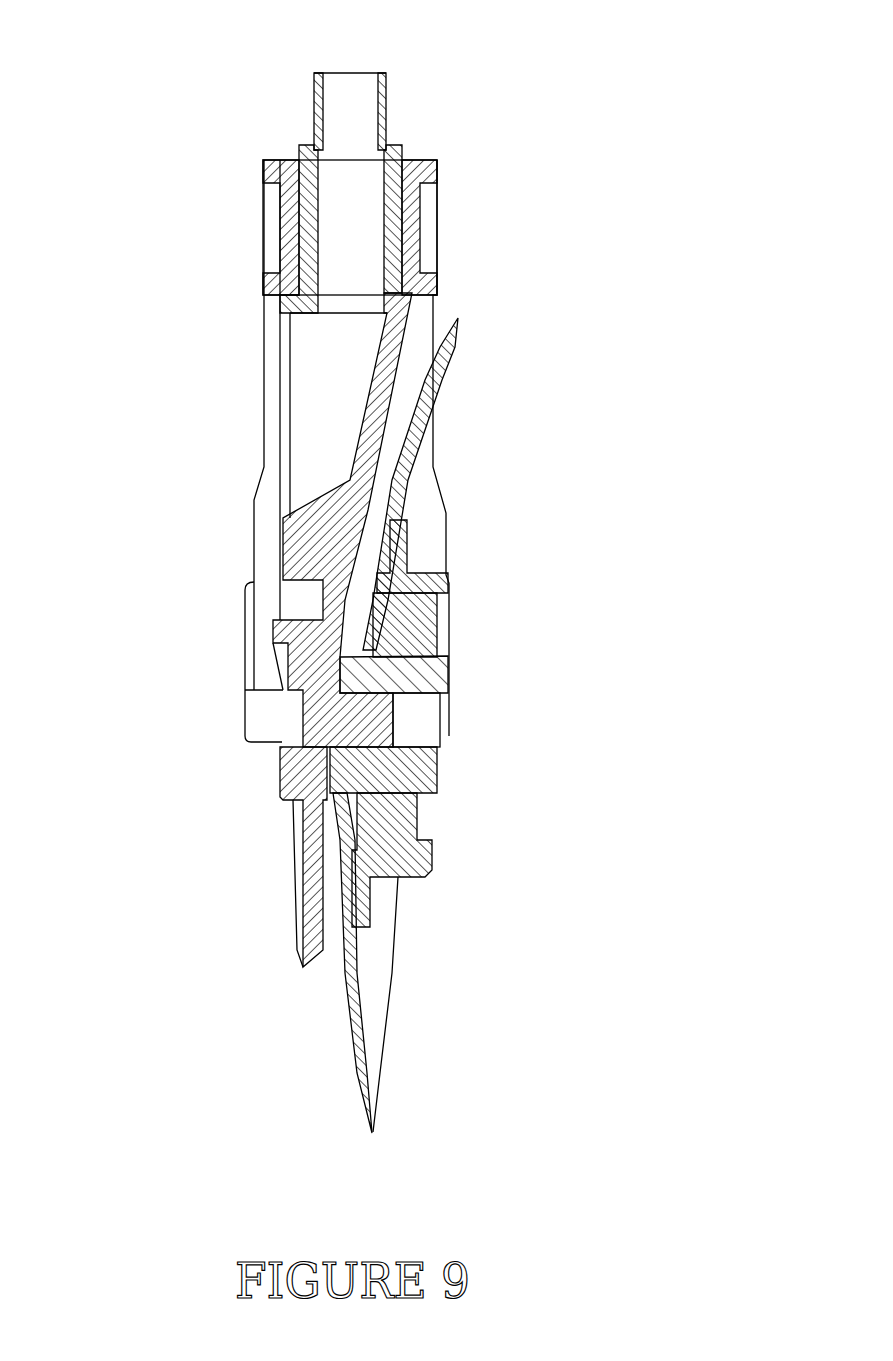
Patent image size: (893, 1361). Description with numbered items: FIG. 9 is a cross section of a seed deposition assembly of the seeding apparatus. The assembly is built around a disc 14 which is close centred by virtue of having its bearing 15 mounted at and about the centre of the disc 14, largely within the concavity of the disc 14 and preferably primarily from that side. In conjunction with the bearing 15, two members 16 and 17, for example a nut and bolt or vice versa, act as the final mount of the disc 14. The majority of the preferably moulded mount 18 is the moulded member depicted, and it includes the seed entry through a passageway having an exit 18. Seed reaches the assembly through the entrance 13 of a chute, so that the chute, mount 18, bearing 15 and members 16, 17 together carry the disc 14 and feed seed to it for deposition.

The entrance of a chute 13 is at (347, 100).
The disc 14 is at (425, 398).
The bearing 15 is at (427, 632).
The member 16 is at (427, 688).
The member 17 is at (327, 720).
The mount 18 is at (183, 570).